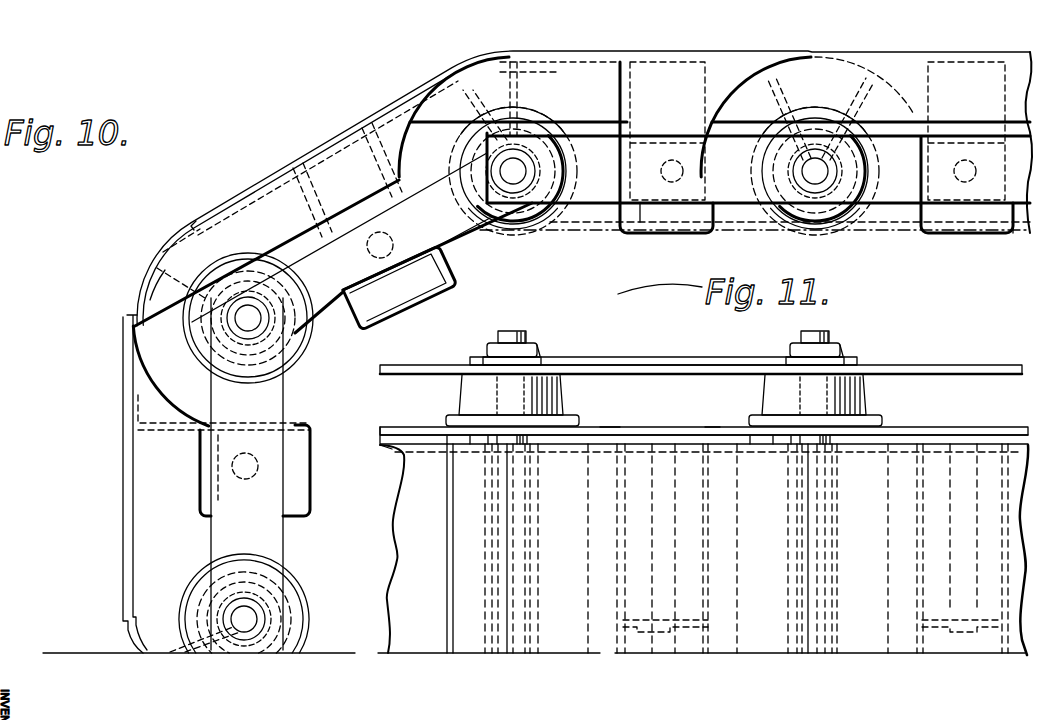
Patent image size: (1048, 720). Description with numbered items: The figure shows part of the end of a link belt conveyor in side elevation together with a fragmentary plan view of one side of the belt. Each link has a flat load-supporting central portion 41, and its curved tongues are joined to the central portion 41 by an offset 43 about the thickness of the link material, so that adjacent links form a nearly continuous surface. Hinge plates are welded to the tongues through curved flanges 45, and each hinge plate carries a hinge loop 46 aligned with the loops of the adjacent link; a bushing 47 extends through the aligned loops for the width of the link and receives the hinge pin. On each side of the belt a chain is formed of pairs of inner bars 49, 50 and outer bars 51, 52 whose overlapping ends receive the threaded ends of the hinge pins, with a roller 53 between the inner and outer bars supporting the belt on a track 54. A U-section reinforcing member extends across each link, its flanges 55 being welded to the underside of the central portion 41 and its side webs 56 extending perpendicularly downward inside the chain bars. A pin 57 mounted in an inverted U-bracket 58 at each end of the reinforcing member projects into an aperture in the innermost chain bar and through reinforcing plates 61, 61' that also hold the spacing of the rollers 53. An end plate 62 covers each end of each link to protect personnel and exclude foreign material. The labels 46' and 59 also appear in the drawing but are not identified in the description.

In FIG. 10, the central portion 41 is at (223, 194).
In FIG. 10, the offset 43 is at (189, 221).
In FIG. 10, the curved flanges 45 is at (150, 290).
In FIG. 10, the hinge loop 46 is at (529, 357).
In FIG. 11, the roller axle nut 46' is at (716, 340).
In FIG. 10, the bushing 47 is at (519, 182).
In FIG. 10, the inner bar 49 is at (147, 268).
In FIG. 11, the inner bar 49 is at (622, 417).
In FIG. 11, the inner bar 50 is at (408, 411).
In FIG. 11, the outer bar 51 is at (428, 359).
In FIG. 11, the outer bar 52 is at (622, 349).
In FIG. 10, the roller 53 is at (823, 230).
In FIG. 11, the roller 53 is at (565, 385).
In FIG. 10, the track 54 is at (600, 228).
In FIG. 10, the flanges 55 is at (732, 63).
In FIG. 10, the side webs 56 is at (700, 92).
In FIG. 10, the pin 57 is at (958, 180).
In FIG. 11, the pin 57 is at (722, 413).
In FIG. 10, the inverted U-bracket 58 is at (993, 213).
In FIG. 11, the inverted U-bracket 58 is at (518, 333).
In FIG. 10, the link bar 59 is at (666, 228).
In FIG. 11, the reinforcing plate 61 is at (727, 520).
In FIG. 11, the reinforcing plate 61' is at (370, 460).
In FIG. 10, the end plate 62 is at (155, 403).